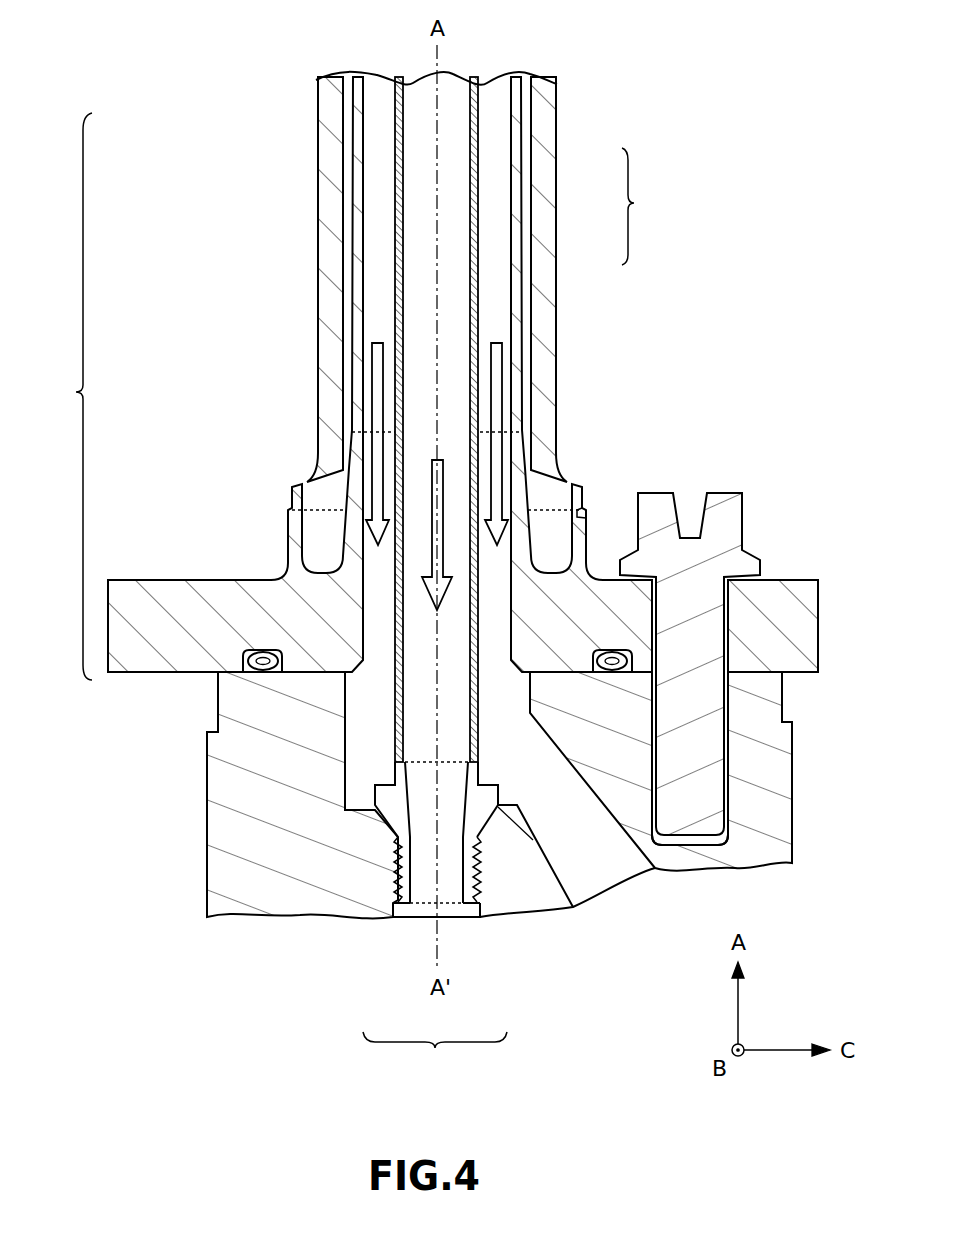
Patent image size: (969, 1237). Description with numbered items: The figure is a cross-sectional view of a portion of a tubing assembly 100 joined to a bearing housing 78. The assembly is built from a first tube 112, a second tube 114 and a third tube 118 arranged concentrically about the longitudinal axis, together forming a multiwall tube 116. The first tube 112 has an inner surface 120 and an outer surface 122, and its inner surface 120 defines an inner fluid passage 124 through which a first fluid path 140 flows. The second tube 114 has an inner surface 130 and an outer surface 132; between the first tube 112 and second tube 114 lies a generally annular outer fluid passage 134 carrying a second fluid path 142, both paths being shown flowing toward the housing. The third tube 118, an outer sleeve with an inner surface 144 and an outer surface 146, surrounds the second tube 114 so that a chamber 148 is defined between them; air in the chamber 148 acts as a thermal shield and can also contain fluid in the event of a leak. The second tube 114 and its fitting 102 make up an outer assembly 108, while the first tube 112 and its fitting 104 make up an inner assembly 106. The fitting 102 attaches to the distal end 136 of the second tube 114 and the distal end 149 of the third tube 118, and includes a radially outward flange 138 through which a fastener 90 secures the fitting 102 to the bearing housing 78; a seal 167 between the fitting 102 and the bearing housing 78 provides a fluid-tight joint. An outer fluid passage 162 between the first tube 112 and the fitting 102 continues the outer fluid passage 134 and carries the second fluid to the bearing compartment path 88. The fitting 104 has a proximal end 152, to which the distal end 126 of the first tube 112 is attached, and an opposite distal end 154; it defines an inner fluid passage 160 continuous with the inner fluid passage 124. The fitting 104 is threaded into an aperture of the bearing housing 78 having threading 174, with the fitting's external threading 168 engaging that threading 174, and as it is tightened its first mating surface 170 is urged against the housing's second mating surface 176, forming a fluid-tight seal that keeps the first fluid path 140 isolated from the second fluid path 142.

The tubing assembly 100 is at (220, 73).
The outer assembly 108 is at (65, 396).
The inner fluid passage 124 is at (420, 123).
The outer fluid passage 134 is at (377, 176).
The outer surface 122 is at (412, 240).
The inner surface 120 is at (437, 243).
The inner surface 144 is at (533, 100).
The inner surface 130 is at (513, 307).
The first fluid path 140 is at (433, 467).
The second fluid path 142 is at (380, 453).
The distal end 136 is at (523, 443).
The distal end 149 is at (580, 518).
The outer surface 146 is at (553, 87).
The chamber 148 is at (527, 118).
The third tube 118 is at (543, 160).
The second tube 114 is at (515, 206).
The first tube 112 is at (500, 247).
The multiwall tube 116 is at (644, 206).
The outer surface 132 is at (522, 305).
The fitting 102 is at (287, 580).
The seal 167 is at (250, 655).
The outer fluid passage 162 is at (498, 637).
The fastener 90 is at (722, 554).
The flange 138 is at (805, 591).
The bearing housing 78 is at (228, 795).
The bearing compartment path 88 is at (590, 872).
The proximal end 152 is at (387, 765).
The fitting 104 is at (490, 793).
The distal end 126 is at (400, 770).
The second mating surface 176 is at (388, 822).
The first mating surface 170 is at (393, 836).
The threading 174 is at (406, 869).
The inner fluid passage 160 is at (460, 844).
The external threads 168 is at (478, 888).
The distal end 154 is at (394, 920).
The inner assembly 106 is at (435, 1056).